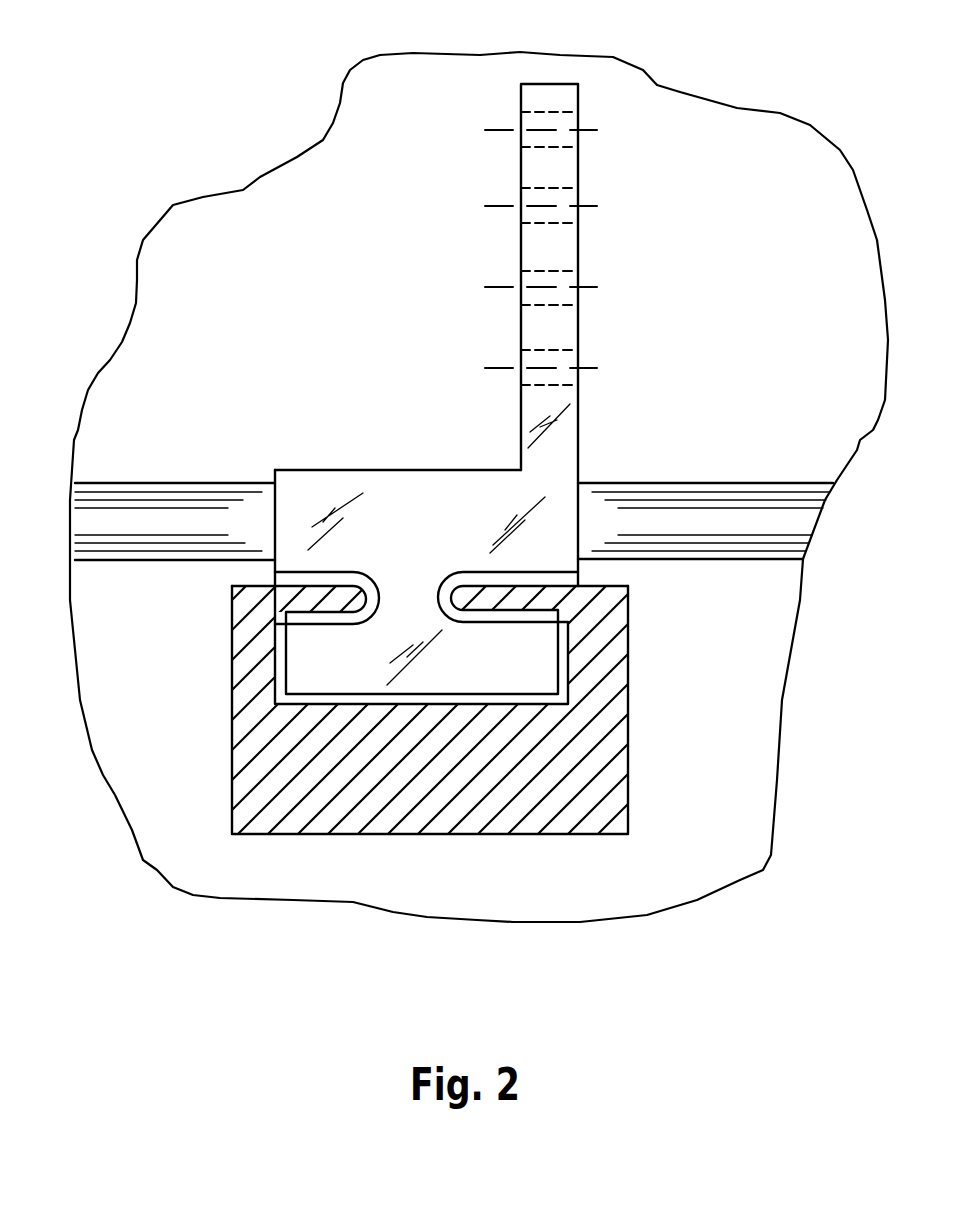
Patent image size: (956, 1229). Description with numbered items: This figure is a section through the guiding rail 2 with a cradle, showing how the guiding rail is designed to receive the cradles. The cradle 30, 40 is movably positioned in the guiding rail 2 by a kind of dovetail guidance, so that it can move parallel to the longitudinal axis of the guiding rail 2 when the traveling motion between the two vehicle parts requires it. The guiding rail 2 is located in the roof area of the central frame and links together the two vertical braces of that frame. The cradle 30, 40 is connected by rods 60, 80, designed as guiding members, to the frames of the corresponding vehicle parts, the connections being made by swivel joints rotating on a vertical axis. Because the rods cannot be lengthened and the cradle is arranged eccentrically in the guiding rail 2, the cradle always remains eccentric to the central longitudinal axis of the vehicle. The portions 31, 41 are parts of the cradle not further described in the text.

The guiding rail 2 is at (302, 802).
The cradle 30 is at (312, 359).
The cradle 40 is at (383, 458).
The clip web with bend lines 31 is at (654, 293).
The clip web with bend lines 41 is at (550, 125).
The rod 60 is at (697, 522).
The rod 80 is at (145, 518).